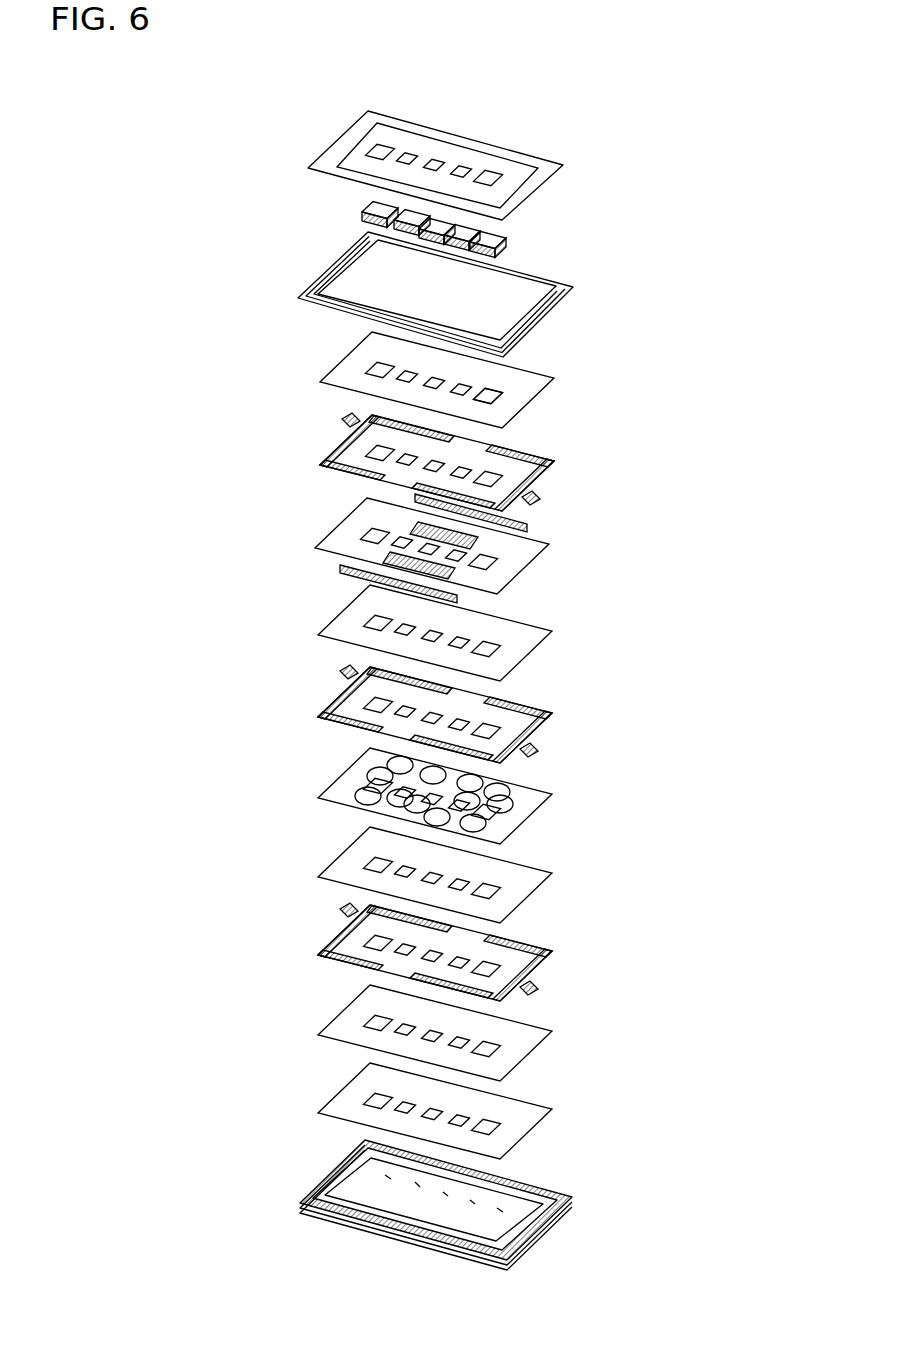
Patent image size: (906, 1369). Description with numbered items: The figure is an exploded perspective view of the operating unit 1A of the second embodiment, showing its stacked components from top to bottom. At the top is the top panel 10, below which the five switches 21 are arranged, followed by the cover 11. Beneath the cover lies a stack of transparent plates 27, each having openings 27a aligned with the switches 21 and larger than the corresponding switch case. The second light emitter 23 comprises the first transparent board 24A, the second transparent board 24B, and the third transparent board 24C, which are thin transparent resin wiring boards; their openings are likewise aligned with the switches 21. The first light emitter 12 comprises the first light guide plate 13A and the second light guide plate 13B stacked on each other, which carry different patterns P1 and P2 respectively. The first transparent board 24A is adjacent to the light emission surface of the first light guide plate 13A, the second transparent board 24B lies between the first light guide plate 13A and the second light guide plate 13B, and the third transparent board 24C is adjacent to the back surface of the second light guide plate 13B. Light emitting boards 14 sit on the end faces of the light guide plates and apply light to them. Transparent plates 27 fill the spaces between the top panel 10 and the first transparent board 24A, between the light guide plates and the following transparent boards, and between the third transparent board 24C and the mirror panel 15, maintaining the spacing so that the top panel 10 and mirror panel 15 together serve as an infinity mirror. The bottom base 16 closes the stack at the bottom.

The operating unit 1A is at (588, 132).
The top panel 10 is at (333, 139).
The switches 21 is at (366, 205).
The cover 11 is at (327, 260).
The transparent plates 27 is at (537, 410).
The openings 27a is at (491, 396).
The first transparent board 24A is at (537, 491).
The second transparent board 24B is at (537, 745).
The third transparent board 24C is at (537, 984).
The first light guide plate 13A is at (369, 541).
The second light guide plate 13B is at (369, 788).
The light emitting boards 14 is at (411, 496).
The first light emitter 12 is at (342, 659).
The second light emitter 23 is at (732, 487).
The pattern P1 is at (465, 538).
The pattern P2 is at (507, 800).
The mirror panel 15 is at (337, 1082).
The bottom base 16 is at (325, 1166).